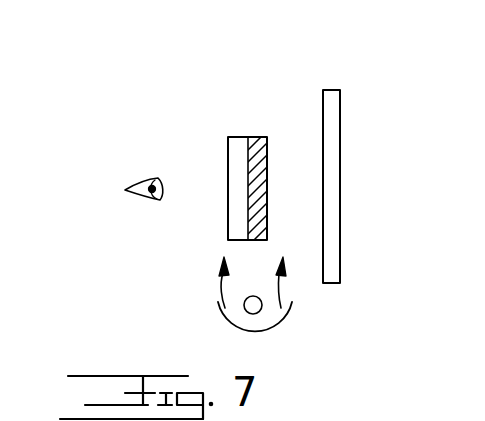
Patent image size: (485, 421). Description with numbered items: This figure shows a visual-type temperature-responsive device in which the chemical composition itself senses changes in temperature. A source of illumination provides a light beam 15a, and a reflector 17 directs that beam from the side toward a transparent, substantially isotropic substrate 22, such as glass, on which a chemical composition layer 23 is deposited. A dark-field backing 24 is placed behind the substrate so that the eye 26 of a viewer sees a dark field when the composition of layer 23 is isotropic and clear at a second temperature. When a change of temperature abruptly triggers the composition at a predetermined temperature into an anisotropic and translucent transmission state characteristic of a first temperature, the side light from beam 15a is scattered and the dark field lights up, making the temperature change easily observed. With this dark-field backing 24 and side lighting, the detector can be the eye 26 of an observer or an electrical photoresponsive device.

The light beam 15a is at (255, 314).
The reflector 17 is at (285, 310).
The transparent, substantially isotropic substrate 22 is at (260, 137).
The chemical composition layer 23 is at (237, 137).
The dark-field backing 24 is at (333, 90).
The eye 26 is at (130, 188).